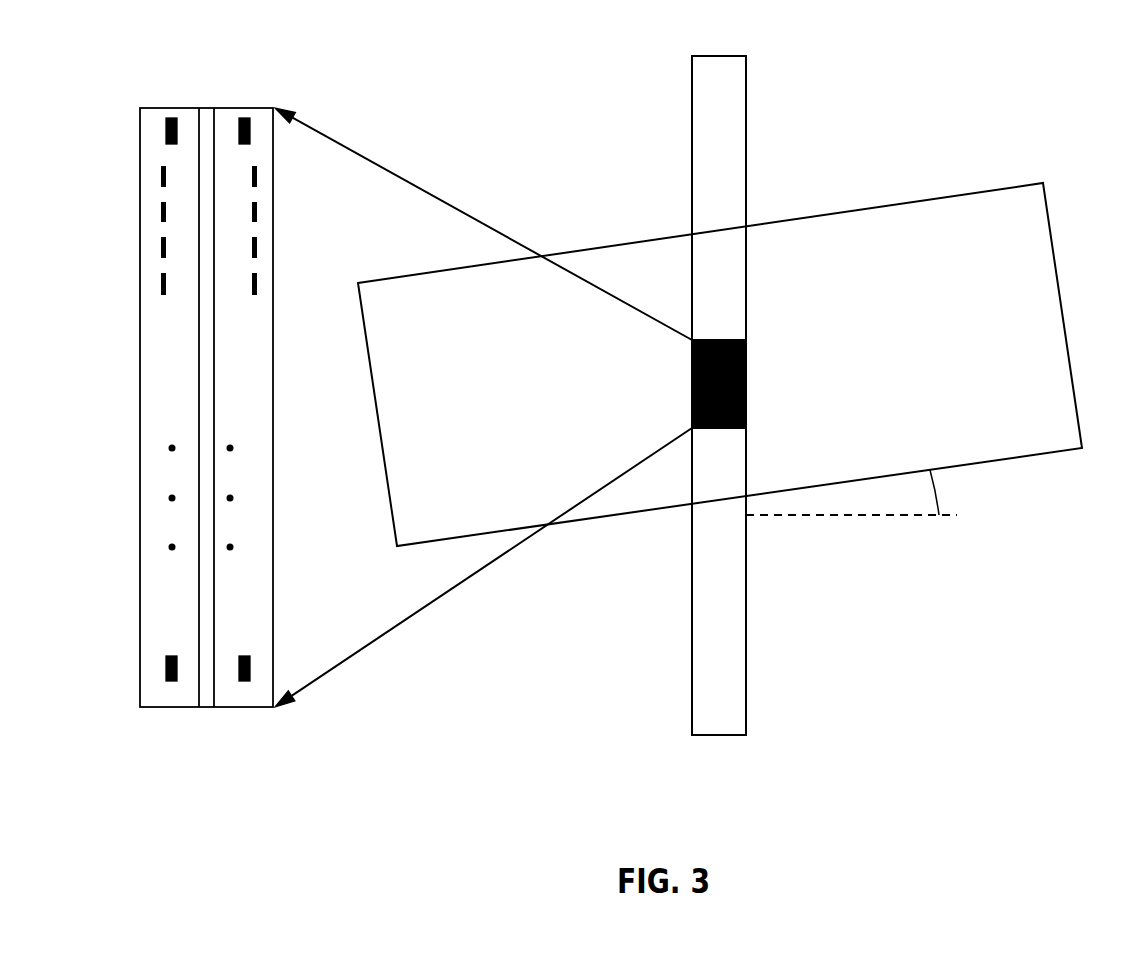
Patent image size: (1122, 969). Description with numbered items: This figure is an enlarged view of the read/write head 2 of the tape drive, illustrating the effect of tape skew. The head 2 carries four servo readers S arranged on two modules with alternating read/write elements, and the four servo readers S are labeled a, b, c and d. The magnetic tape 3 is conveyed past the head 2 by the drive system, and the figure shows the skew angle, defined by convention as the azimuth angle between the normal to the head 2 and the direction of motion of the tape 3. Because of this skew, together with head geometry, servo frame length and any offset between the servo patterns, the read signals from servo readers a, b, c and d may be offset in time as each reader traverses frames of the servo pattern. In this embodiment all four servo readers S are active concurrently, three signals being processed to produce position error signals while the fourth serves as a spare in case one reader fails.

The read/write head 2 is at (140, 374).
The magnetic tape 3 is at (970, 190).
The servo reader S is at (172, 118).
The servo reader a is at (166, 140).
The servo reader b is at (166, 660).
The servo reader c is at (250, 140).
The servo reader d is at (252, 660).